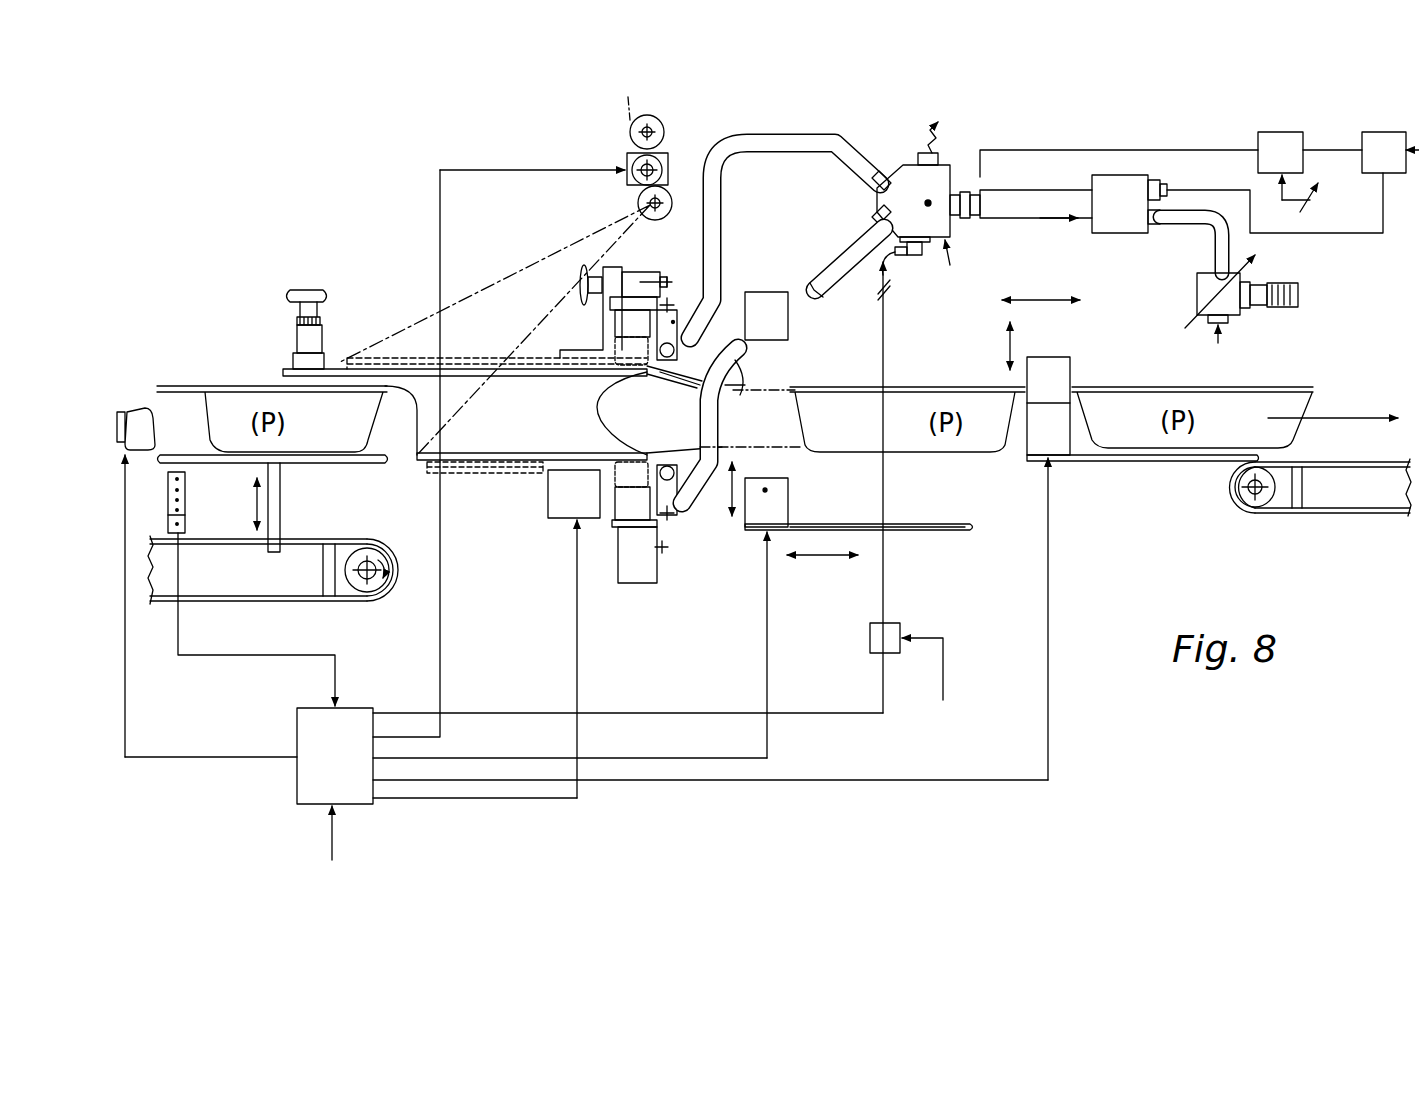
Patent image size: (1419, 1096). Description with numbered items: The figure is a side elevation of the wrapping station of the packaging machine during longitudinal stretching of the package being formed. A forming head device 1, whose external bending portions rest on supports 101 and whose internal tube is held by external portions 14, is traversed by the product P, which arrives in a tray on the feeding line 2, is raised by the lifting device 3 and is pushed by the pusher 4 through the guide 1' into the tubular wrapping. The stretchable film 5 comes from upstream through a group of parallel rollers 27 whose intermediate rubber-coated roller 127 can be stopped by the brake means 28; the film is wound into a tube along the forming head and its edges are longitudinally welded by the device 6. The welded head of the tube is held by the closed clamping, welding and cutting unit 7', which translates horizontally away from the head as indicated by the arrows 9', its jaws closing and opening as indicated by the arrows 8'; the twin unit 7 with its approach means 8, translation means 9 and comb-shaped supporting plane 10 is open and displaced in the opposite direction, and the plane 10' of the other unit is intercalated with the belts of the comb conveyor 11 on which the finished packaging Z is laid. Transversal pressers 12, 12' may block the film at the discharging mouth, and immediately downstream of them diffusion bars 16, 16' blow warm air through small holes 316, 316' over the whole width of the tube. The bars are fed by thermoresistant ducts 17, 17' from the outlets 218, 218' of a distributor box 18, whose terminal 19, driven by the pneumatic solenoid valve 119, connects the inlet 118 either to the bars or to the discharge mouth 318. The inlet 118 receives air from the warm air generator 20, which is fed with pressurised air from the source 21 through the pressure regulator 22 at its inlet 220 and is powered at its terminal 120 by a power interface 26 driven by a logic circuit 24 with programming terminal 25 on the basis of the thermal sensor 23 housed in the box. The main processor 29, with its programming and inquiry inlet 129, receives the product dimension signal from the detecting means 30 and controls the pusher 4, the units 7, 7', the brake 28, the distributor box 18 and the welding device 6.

The forming head device 1 is at (534, 375).
The guide 1' is at (465, 315).
The feeding line 2 is at (398, 596).
The lifting device 3 is at (305, 463).
The pusher 4 is at (140, 410).
The film 5 is at (628, 97).
The longitudinal welding device 6 is at (563, 493).
The clamping, welding and cutting unit 7 is at (786, 409).
The second clamping, welding and cutting unit 7' is at (1069, 549).
The approach and separation means 8 is at (847, 610).
The approach and separation means of second unit 8' is at (993, 346).
The horizontal translation means 9 is at (822, 577).
The horizontal translation means of second unit 9' is at (1041, 280).
The supporting plane 10 is at (877, 554).
The supporting plane of second unit 10' is at (1143, 482).
The comb conveyor 11 is at (1378, 518).
The transversal presser 12 is at (606, 337).
The transversal presser 12' is at (619, 522).
The external portions 14 is at (302, 345).
The diffusion bar 16 is at (676, 308).
The diffusion bar 16' is at (678, 523).
The thermoresistant duct 17 is at (785, 213).
The thermoresistant duct 17' is at (710, 439).
The distributor box 18 is at (926, 235).
The terminal 19 is at (897, 253).
The warm air generator 20 is at (1110, 215).
The pressurised air source 21 is at (1218, 340).
The pressure regulator 22 is at (1205, 290).
The thermal sensor 23 is at (930, 205).
The logic circuit 24 is at (1280, 152).
The programming and control terminal 25 is at (1312, 201).
The power interface 26 is at (1361, 152).
The parallel rollers 27 is at (682, 140).
The stopping means 28 is at (640, 186).
The main processor 29 is at (586, 487).
The product dimension detecting means 30 is at (186, 515).
The supports 101 is at (640, 282).
The inlet 118 is at (965, 200).
The pneumatic solenoid valve 119 is at (885, 636).
The terminal 120 is at (1162, 192).
The rubber-coated roller 127 is at (630, 156).
The programming and inquiry inlet 129 is at (333, 840).
The outlet 218 is at (883, 154).
The outlet 218' is at (849, 250).
The inlet 220 is at (1162, 224).
The small holes 316 is at (727, 364).
The small holes 316' is at (738, 442).
The discharge mouth 318 is at (940, 158).
The packaging Z is at (1297, 382).